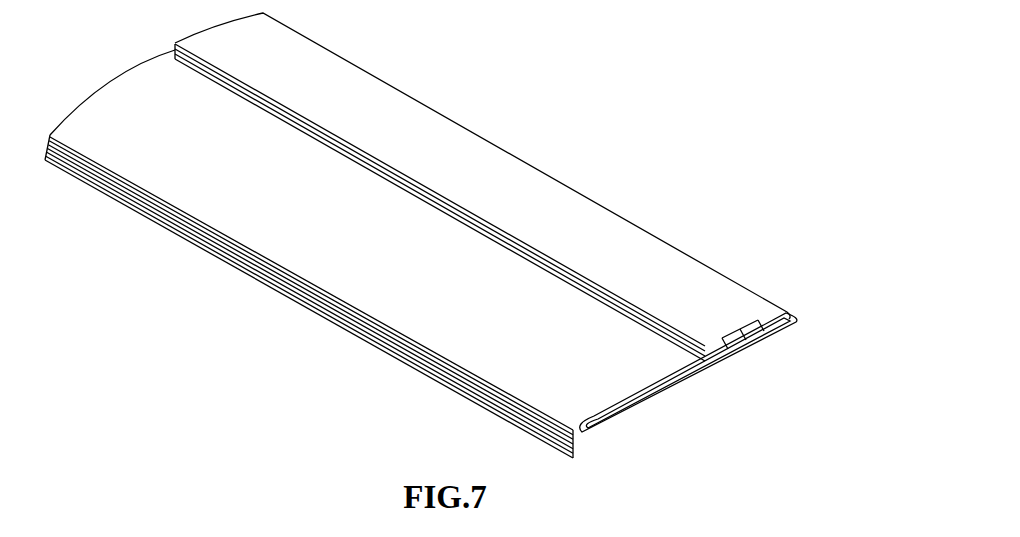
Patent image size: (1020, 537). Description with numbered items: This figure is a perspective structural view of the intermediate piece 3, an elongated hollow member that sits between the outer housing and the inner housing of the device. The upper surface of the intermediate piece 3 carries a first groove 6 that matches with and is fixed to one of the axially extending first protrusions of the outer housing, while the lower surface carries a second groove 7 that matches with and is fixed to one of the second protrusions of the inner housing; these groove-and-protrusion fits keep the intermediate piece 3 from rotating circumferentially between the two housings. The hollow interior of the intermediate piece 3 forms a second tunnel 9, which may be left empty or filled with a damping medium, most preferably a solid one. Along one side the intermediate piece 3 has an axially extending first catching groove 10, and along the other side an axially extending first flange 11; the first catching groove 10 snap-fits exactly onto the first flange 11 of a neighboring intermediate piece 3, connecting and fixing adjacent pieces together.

The intermediate piece 3 is at (523, 161).
The first groove 6 is at (527, 202).
The second groove 7 is at (729, 384).
The second tunnel 9 is at (798, 290).
The first catching groove 10 is at (309, 254).
The first flange 11 is at (833, 332).